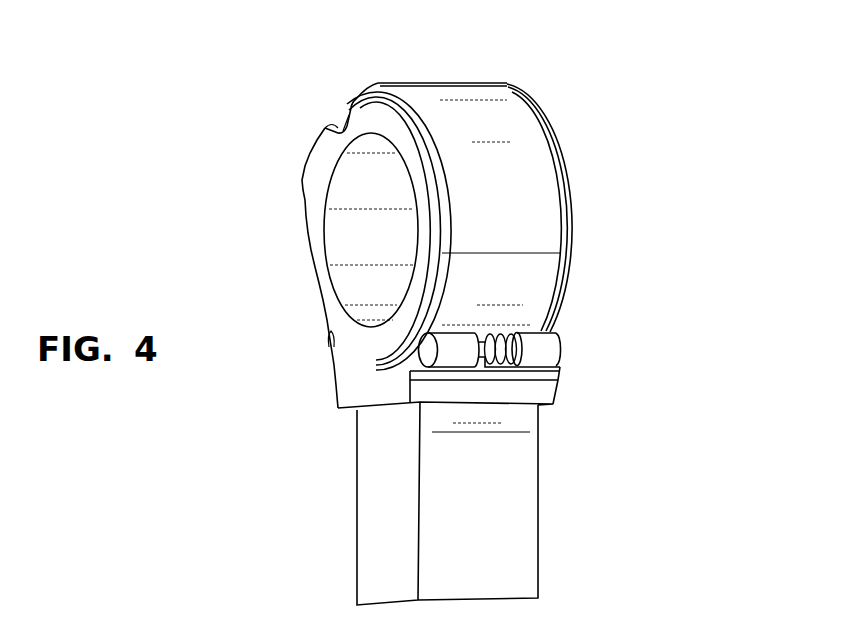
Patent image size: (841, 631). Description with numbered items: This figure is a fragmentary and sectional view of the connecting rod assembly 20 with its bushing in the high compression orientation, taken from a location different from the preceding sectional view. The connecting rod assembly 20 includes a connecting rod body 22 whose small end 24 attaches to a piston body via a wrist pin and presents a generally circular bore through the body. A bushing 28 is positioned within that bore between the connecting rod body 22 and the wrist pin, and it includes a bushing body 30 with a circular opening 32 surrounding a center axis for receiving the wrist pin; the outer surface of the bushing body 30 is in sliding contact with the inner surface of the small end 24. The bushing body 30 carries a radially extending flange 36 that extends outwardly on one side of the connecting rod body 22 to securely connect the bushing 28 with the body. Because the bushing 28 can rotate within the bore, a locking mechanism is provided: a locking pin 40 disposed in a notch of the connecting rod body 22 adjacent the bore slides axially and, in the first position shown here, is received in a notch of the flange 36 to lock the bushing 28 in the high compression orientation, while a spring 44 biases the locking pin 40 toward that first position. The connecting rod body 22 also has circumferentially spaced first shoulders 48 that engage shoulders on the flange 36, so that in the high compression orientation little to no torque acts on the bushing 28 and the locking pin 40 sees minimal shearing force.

The connecting rod assembly 20 is at (426, 424).
The connecting rod body 22 is at (348, 565).
The small end 24 is at (393, 214).
The bushing 28 is at (298, 245).
The bushing body 30 is at (392, 123).
The circular opening 32 is at (362, 188).
The flange 36 is at (370, 343).
The locking pin 40 is at (551, 351).
The spring 44 is at (498, 332).
The first shoulders 48 is at (338, 127).